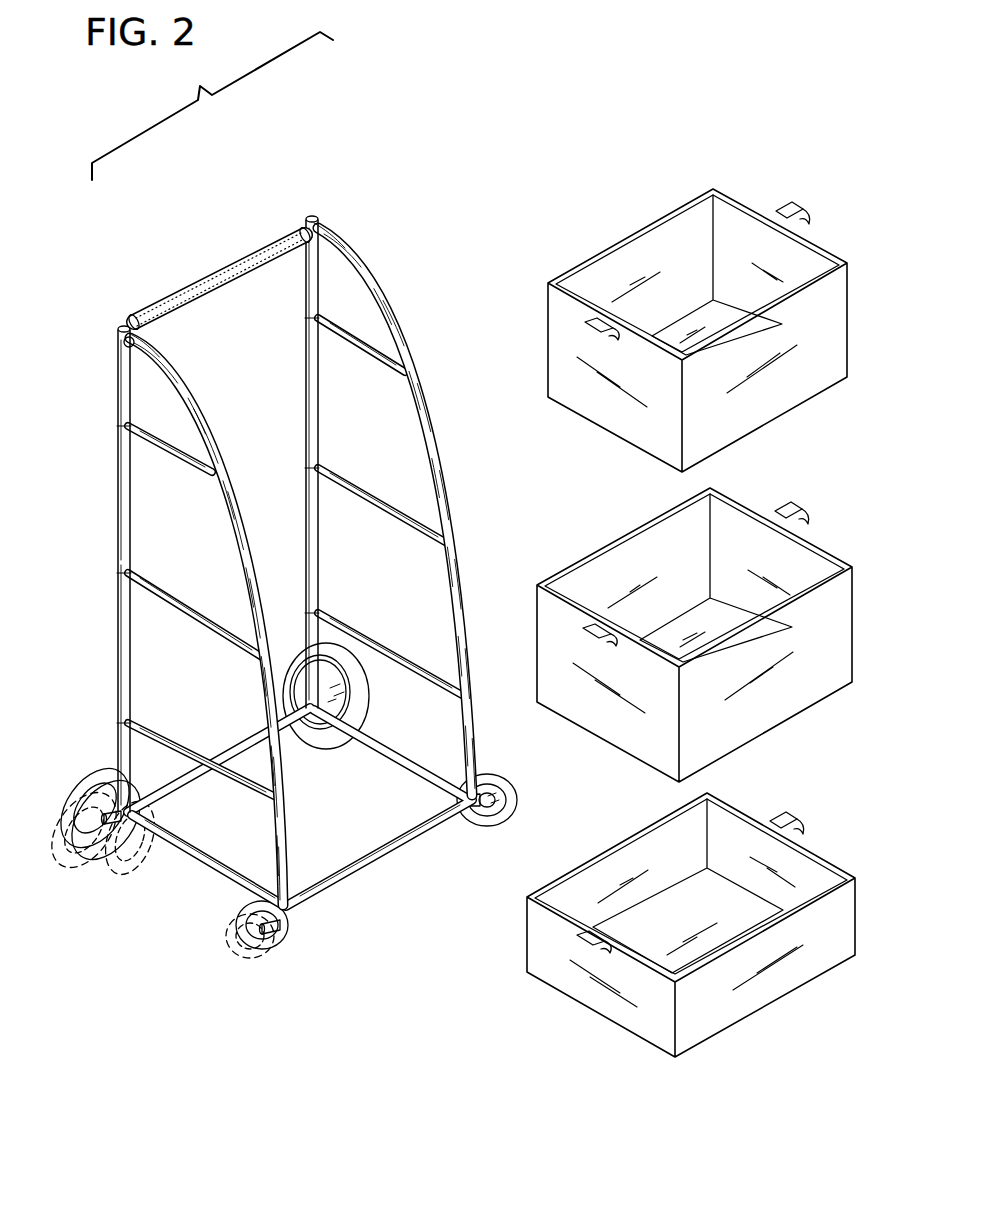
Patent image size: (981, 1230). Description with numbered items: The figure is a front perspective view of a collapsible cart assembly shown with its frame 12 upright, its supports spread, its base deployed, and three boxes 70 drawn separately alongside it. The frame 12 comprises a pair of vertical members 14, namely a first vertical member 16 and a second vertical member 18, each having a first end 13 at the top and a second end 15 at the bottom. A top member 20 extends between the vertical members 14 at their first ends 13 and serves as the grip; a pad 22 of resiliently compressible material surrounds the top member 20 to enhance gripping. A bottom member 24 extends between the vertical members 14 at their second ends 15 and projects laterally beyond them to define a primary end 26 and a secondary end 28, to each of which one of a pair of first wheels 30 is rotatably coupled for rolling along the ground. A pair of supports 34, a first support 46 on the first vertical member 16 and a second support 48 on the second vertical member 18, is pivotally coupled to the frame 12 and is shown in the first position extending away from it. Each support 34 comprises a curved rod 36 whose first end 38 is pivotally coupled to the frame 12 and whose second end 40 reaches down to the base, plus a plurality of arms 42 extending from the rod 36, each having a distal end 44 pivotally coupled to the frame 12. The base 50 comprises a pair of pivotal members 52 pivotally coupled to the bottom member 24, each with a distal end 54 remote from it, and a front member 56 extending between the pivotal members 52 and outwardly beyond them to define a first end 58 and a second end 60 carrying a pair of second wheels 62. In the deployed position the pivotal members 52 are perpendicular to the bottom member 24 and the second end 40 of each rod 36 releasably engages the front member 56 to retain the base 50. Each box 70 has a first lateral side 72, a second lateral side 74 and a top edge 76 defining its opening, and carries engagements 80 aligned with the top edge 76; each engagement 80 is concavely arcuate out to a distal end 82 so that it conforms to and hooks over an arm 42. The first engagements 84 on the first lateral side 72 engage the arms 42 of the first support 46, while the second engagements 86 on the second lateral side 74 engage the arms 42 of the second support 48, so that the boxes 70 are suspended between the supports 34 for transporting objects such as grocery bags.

The frame 12 is at (322, 284).
The first end 13 is at (122, 328).
The vertical members 14 is at (320, 420).
The second end 15 is at (117, 836).
The first vertical member 16 is at (120, 552).
The second vertical member 18 is at (393, 375).
The top member 20 is at (311, 215).
The pad 22 is at (200, 290).
The bottom member 24 is at (186, 802).
The primary end 26 is at (66, 834).
The secondary end 28 is at (352, 684).
The first wheels 30 is at (100, 782).
The supports 34 is at (160, 414).
The rod 36 is at (390, 316).
The first end 38 is at (121, 351).
The second end 40 is at (303, 944).
The arms 42 is at (184, 455).
The distal end 44 is at (210, 474).
The first support 46 is at (182, 382).
The second support 48 is at (338, 250).
The base 50 is at (406, 868).
The pivotal members 52 is at (450, 762).
The distal end 54 is at (481, 816).
The front member 56 is at (422, 850).
The first end 58 is at (260, 950).
The second end 60 is at (507, 790).
The second wheels 62 is at (506, 822).
The boxes 70 is at (848, 358).
The first lateral side 72 is at (643, 430).
The second lateral side 74 is at (848, 298).
The top edge 76 is at (640, 230).
The engagements 80 is at (776, 212).
The distal end 82 is at (811, 224).
The first engagements 84 is at (582, 336).
The second engagements 86 is at (793, 196).